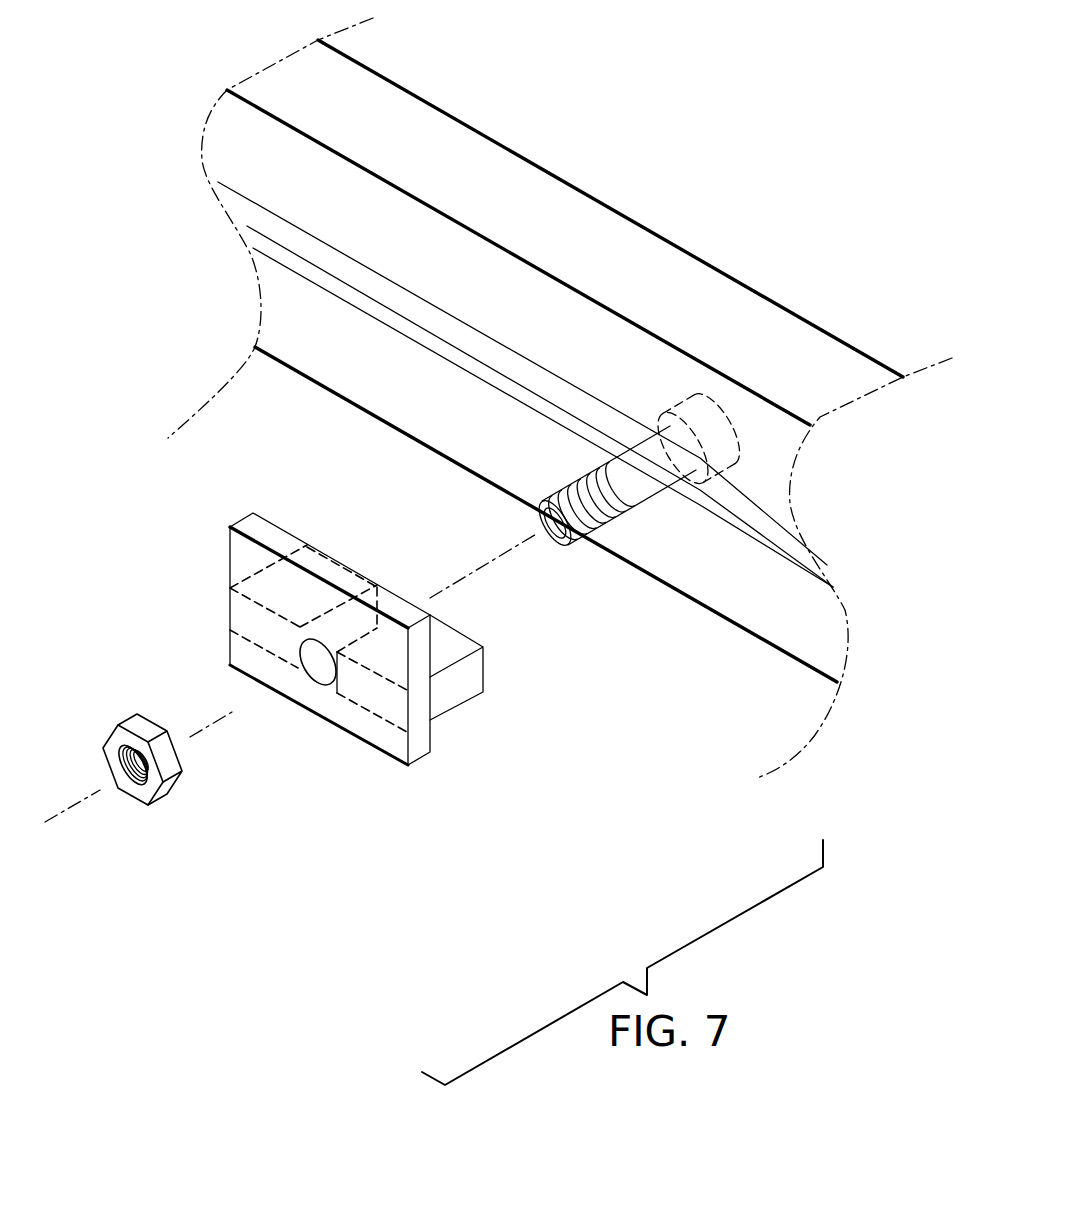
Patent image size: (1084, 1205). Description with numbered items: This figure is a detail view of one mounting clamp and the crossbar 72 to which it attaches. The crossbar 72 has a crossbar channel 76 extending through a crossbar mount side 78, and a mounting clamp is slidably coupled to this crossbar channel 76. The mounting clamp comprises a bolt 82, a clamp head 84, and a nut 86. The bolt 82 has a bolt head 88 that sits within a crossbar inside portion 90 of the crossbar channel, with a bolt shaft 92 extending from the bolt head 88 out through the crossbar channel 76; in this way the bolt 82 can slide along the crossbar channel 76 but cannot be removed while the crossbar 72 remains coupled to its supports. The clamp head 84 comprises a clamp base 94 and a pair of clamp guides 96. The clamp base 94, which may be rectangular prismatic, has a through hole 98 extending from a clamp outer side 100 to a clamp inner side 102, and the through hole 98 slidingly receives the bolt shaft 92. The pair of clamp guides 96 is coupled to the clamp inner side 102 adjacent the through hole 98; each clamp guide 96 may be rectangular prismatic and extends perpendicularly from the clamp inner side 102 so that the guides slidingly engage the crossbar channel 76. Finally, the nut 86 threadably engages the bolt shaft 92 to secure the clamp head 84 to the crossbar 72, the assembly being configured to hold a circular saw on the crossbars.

The crossbar 72 is at (786, 338).
The crossbar channel 76 is at (375, 320).
The crossbar mount side 78 is at (516, 290).
The bolt 82 is at (663, 478).
The clamp head 84 is at (408, 684).
The nut 86 is at (170, 770).
The bolt head 88 is at (733, 463).
The crossbar inside portion 90 is at (763, 522).
The bolt shaft 92 is at (600, 523).
The clamp base 94 is at (420, 736).
The clamp guide 96 is at (472, 670).
The through hole 98 is at (322, 675).
The clamp outer side 100 is at (362, 727).
The clamp inner side 102 is at (437, 633).